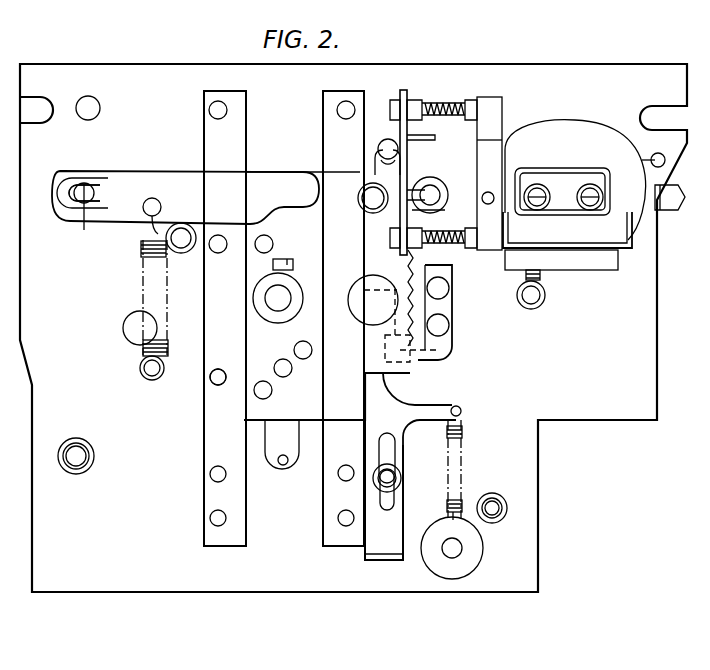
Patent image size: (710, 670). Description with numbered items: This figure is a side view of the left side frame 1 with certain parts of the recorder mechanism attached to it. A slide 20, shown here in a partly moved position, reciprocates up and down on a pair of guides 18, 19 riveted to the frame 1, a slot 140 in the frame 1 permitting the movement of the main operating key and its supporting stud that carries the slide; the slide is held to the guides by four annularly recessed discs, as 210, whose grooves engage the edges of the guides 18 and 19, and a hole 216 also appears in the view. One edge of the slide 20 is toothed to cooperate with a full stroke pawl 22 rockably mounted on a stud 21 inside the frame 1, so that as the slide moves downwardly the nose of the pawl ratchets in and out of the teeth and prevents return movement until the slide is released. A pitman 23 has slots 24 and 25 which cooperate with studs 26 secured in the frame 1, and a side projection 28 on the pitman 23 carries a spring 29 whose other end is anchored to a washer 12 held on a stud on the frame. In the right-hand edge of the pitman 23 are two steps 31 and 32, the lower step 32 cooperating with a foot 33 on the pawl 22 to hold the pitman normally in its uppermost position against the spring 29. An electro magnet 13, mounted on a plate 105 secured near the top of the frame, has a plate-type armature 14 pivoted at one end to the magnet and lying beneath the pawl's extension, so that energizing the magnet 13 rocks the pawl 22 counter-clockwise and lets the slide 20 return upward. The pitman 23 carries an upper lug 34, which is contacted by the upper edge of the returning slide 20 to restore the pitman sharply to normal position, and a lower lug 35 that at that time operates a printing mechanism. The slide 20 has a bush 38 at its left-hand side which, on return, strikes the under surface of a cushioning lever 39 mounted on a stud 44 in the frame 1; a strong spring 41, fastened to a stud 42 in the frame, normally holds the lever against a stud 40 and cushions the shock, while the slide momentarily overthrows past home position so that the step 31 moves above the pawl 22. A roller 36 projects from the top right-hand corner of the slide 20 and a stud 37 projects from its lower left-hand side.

The left side frame 1 is at (128, 72).
The washer 12 is at (462, 570).
The electro magnet 13 is at (570, 130).
The armature 14 is at (633, 248).
The guide 18 is at (222, 548).
The guide 19 is at (340, 548).
The slide 20 is at (278, 175).
The stud 21 is at (432, 190).
The full stroke pawl 22 is at (446, 325).
The pitman 23 is at (388, 412).
The slot 24 is at (380, 150).
The slot 25 is at (381, 443).
The stud 26 is at (378, 485).
The side projection 28 is at (462, 412).
The spring 29 is at (455, 468).
The step 31 is at (455, 302).
The step 32 is at (420, 348).
The foot 33 is at (400, 357).
The upper lug 34 is at (392, 103).
The lower lug 35 is at (392, 558).
The roller 36 is at (358, 198).
The stud 37 is at (260, 390).
The bush 38 is at (262, 296).
The cushioning lever 39 is at (125, 172).
The stud 40 is at (180, 252).
The spring 41 is at (140, 287).
The stud 42 is at (150, 370).
The stud 44 is at (84, 220).
The plate 105 is at (497, 118).
The slot 140 is at (283, 465).
The annularly recessed disc 210 is at (222, 389).
The hole 216 is at (242, 253).